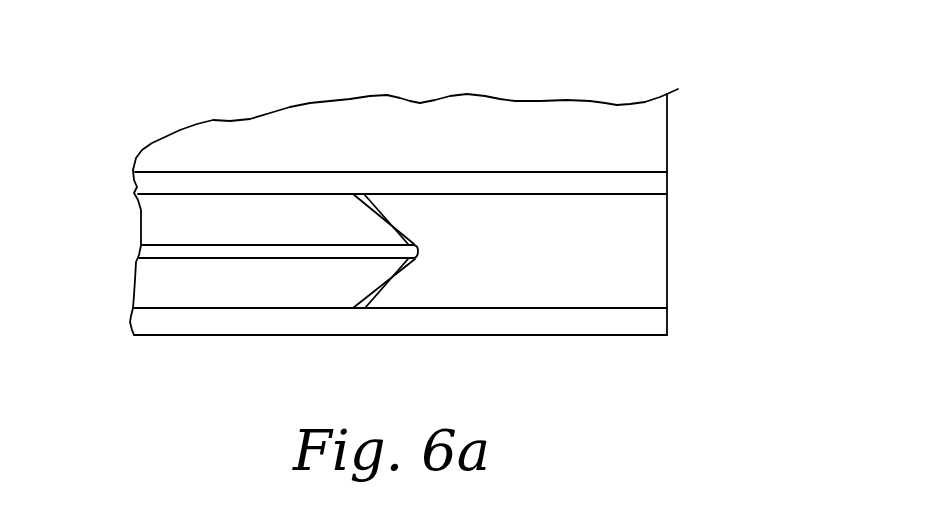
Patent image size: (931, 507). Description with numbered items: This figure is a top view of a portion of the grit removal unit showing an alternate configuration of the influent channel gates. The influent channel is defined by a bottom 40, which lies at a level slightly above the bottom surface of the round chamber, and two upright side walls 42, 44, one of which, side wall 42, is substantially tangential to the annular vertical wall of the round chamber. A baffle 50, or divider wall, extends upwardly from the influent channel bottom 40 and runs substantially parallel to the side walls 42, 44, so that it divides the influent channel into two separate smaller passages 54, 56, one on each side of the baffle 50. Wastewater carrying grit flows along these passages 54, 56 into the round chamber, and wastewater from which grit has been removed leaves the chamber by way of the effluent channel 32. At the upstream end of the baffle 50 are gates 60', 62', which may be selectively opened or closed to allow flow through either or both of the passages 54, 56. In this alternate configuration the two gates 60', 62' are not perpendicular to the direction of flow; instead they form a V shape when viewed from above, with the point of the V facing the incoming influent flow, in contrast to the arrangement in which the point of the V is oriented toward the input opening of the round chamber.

The effluent channel 32 is at (405, 87).
The bottom 40 is at (614, 260).
The side wall 42 is at (400, 336).
The side wall 44 is at (438, 193).
The baffle 50 is at (225, 235).
The passage 54 is at (400, 353).
The passage 56 is at (402, 109).
The gate 60' is at (427, 323).
The gate 62' is at (459, 142).